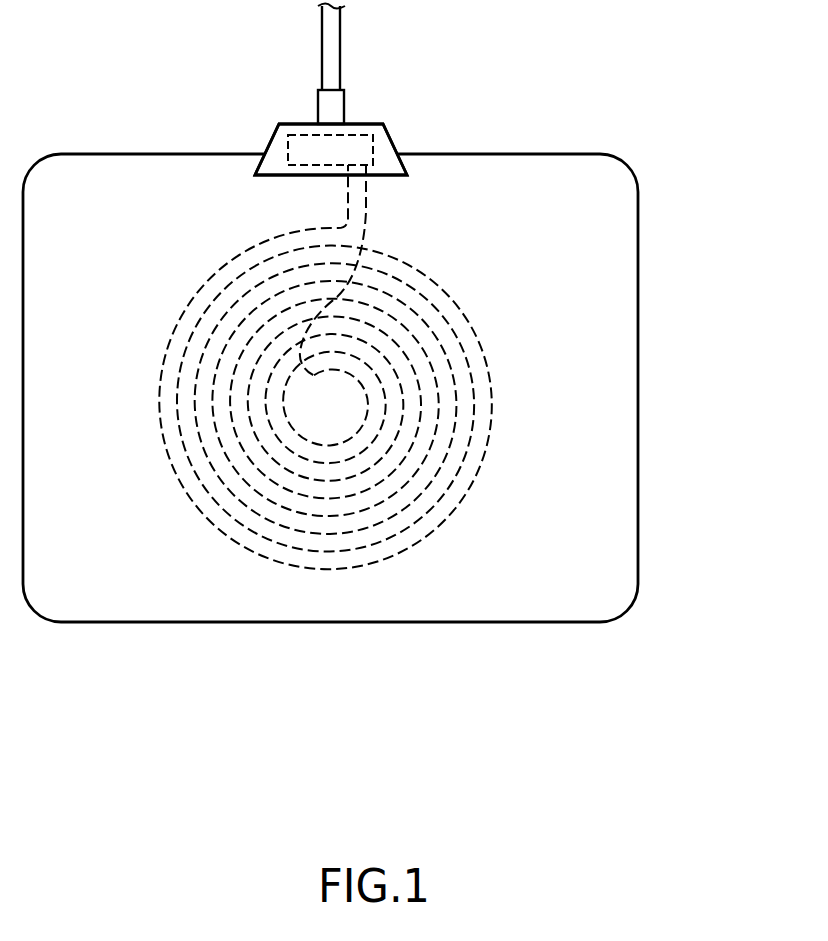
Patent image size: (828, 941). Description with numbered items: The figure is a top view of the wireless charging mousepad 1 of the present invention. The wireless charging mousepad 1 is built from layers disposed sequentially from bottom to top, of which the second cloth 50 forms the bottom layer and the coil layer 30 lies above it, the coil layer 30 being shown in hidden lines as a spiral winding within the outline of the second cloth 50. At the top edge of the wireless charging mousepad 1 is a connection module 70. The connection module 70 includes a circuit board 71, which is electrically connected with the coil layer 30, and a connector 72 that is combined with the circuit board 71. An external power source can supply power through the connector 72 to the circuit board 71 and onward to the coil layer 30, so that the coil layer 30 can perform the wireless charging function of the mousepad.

The wireless charging mousepad 1 is at (99, 29).
The coil layer 30 is at (442, 270).
The second cloth 50 is at (600, 220).
The connection module 70 is at (395, 124).
The circuit board 71 is at (302, 148).
The connector 72 is at (276, 155).